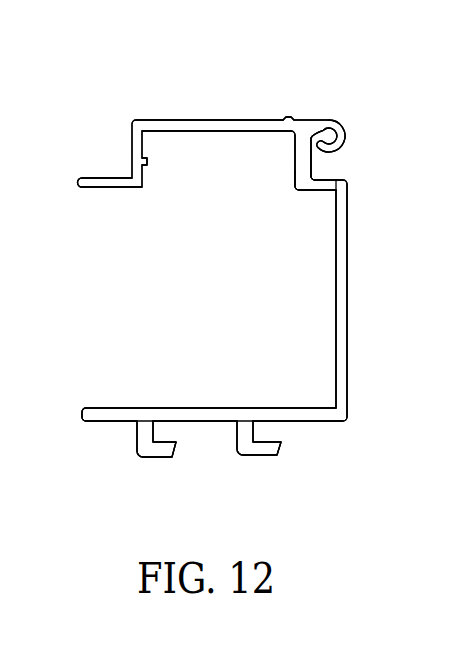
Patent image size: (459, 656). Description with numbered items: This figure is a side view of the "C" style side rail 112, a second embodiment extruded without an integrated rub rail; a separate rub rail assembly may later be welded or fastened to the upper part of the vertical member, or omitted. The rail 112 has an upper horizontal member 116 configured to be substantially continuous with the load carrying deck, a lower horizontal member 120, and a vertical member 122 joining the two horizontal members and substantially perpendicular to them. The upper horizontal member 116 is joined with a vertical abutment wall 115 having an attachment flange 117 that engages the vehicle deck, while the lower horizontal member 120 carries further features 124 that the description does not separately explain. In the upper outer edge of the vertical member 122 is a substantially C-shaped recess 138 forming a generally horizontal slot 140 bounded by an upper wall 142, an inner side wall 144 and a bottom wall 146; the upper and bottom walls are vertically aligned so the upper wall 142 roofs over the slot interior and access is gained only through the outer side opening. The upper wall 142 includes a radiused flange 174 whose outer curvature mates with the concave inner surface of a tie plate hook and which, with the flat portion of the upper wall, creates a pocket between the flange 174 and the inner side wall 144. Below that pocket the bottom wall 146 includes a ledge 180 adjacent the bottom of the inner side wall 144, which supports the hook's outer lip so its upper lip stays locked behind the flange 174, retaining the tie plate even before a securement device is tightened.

The "C" style side rail 112 is at (352, 91).
The vertical abutment wall 115 is at (132, 143).
The upper horizontal member 116 is at (195, 130).
The attachment flange 117 is at (87, 180).
The lower horizontal member 120 is at (315, 417).
The vertical member 122 is at (343, 308).
The retaining ribs 124 is at (252, 450).
The recess 138 is at (292, 175).
The slot 140 is at (342, 162).
The upper wall 142 is at (317, 122).
The inner side wall 144 is at (314, 156).
The bottom wall 146 is at (345, 175).
The radiused flange 174 is at (350, 148).
The ledge 180 is at (315, 183).